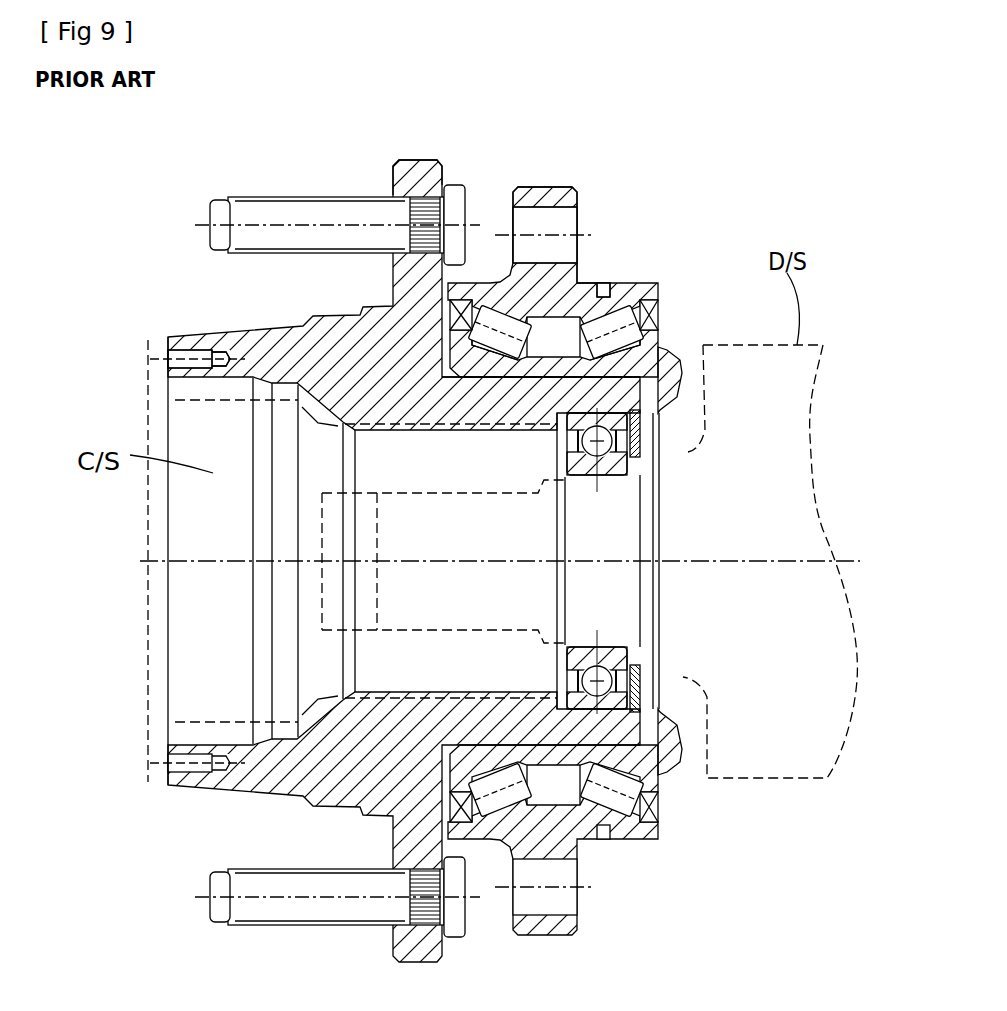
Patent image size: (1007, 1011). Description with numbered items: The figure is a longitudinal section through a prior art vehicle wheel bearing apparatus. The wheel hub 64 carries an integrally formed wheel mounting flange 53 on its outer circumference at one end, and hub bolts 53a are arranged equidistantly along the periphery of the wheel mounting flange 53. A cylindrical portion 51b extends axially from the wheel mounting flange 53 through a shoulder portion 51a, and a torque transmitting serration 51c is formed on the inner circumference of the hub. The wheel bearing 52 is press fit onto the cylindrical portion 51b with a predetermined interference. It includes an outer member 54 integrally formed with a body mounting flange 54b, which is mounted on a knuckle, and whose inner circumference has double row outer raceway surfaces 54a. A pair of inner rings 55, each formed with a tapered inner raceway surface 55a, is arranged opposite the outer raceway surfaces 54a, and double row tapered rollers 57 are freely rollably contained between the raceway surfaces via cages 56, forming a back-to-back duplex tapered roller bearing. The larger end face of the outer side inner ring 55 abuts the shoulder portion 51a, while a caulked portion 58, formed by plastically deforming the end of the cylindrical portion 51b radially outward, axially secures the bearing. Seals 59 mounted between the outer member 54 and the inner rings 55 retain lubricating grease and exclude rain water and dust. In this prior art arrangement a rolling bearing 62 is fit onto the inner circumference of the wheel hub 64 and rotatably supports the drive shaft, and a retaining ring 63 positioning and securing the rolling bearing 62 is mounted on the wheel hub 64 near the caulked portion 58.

The shoulder portion 51a is at (463, 746).
The cylindrical portion 51b is at (468, 378).
The torque transmitting serration 51c is at (410, 430).
The wheel bearing 52 is at (642, 280).
The wheel mounting flange 53 is at (410, 168).
The hub bolts 53a is at (273, 203).
The outer member 54 is at (582, 297).
The outer raceway surfaces 54a is at (480, 303).
The body mounting flange 54b is at (537, 192).
The inner rings 55 is at (645, 362).
The tapered inner raceway surfaces 55a is at (646, 336).
The cages 56 is at (520, 765).
The tapered rollers 57 is at (600, 808).
The caulked portion 58 is at (670, 750).
The seals 59 is at (450, 302).
The rolling bearing 62 is at (635, 668).
The retaining ring 63 is at (635, 693).
The wheel hub 64 is at (230, 348).